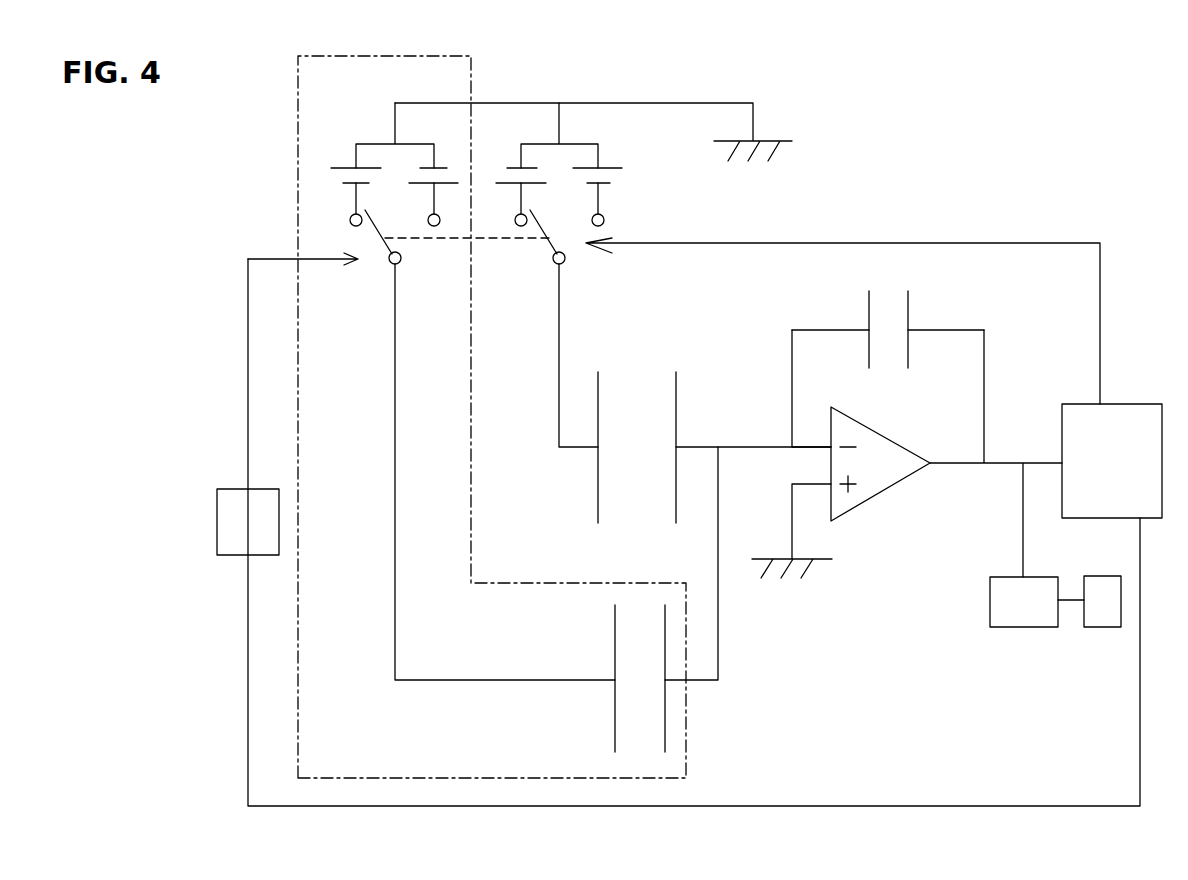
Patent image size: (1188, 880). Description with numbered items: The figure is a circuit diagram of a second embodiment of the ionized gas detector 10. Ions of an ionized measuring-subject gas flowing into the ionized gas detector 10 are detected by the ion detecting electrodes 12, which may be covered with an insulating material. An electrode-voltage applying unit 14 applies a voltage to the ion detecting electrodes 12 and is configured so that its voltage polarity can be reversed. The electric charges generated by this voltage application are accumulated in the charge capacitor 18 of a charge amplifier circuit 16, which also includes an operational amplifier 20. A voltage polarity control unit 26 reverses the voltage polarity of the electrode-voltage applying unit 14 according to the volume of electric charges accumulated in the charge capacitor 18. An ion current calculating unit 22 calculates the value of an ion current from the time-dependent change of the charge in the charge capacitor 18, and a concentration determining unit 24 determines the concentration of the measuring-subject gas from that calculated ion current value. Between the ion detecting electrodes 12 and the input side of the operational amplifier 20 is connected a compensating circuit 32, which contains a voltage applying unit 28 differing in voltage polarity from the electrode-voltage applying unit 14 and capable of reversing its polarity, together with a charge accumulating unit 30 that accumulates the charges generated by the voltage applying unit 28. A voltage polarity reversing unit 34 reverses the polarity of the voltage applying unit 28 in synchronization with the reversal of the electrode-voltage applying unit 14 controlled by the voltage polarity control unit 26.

The ionized gas detector 10 is at (243, 108).
The ion detecting electrodes 12 is at (677, 382).
The electrode-voltage applying unit 14 is at (604, 183).
The charge amplifier circuit 16 is at (950, 420).
The charge capacitor 18 is at (910, 305).
The operational amplifier 20 is at (883, 482).
The ion current calculating unit 22 is at (1022, 615).
The concentration determining unit 24 is at (1100, 617).
The voltage polarity control unit 26 is at (1082, 397).
The voltage applying unit 28 is at (331, 183).
The charge accumulating unit 30 is at (665, 720).
The compensating circuit 32 is at (312, 355).
The voltage polarity reversing unit 34 is at (237, 497).